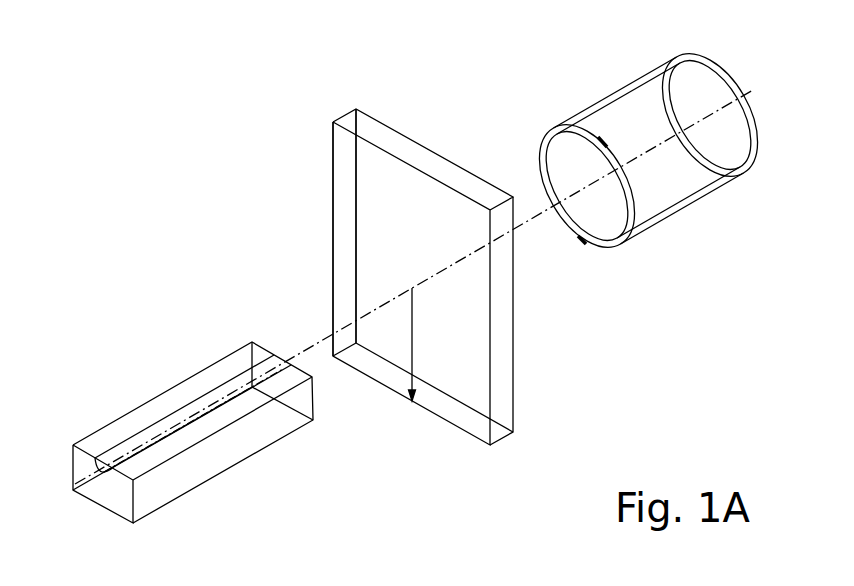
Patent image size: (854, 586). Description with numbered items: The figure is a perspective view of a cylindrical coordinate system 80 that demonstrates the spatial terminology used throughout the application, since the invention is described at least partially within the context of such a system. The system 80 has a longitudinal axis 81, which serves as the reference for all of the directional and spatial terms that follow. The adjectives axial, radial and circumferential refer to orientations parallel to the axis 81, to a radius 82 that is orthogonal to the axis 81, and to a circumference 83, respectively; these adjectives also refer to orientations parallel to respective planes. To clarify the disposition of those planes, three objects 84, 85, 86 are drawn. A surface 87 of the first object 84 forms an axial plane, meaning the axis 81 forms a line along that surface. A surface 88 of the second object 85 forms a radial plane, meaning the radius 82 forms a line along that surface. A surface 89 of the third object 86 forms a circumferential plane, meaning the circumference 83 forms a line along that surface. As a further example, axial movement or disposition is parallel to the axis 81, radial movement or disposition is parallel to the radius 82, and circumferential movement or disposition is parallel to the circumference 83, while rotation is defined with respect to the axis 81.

The cylindrical coordinate system 80 is at (284, 158).
The longitudinal axis 81 is at (745, 92).
The radius 82 is at (412, 335).
The circumference 83 is at (537, 150).
The object 84 is at (158, 510).
The object 85 is at (530, 443).
The object 86 is at (681, 222).
The surface 87 is at (155, 413).
The surface 88 is at (347, 236).
The surface 89 is at (613, 92).